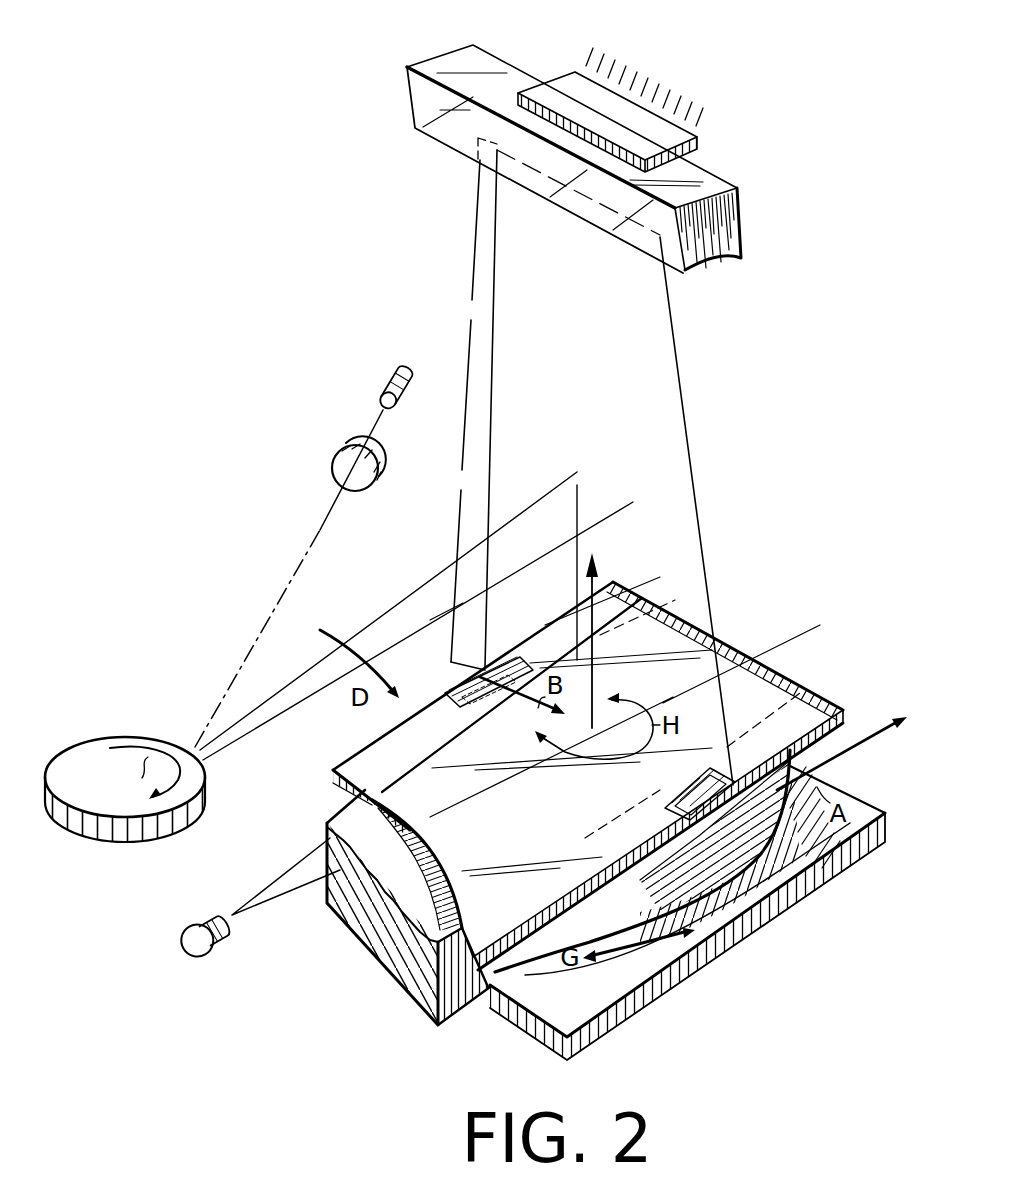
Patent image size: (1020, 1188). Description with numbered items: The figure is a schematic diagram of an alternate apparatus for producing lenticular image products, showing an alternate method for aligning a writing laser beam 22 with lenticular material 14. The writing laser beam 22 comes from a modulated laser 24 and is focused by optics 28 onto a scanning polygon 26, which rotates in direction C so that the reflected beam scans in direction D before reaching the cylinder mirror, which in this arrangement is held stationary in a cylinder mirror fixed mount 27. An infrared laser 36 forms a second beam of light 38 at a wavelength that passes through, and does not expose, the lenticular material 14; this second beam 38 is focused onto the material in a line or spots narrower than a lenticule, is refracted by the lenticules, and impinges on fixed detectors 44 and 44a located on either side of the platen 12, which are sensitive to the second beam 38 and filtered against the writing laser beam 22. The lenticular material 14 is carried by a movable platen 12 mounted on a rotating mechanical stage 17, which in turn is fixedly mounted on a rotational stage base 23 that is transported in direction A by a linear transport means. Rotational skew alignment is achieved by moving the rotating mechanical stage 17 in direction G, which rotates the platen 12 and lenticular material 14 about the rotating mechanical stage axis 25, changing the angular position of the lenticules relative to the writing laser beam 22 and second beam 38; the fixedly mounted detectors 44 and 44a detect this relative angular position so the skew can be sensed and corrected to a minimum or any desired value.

The platen 12 is at (452, 980).
The lenticular material 14 is at (822, 712).
The rotating mechanical stage 17 is at (727, 907).
The writing laser beam 22 is at (257, 637).
The rotational stage base 23 is at (837, 863).
The modulated laser 24 is at (402, 363).
The rotating mechanical stage axis 25 is at (597, 560).
The scanning polygon 26 is at (137, 735).
The cylinder mirror fixed mount 27 is at (573, 72).
The optics 28 is at (333, 468).
The infrared laser 36 is at (190, 943).
The second beam of light 38 is at (277, 878).
The fixed detector 44 is at (645, 805).
The fixed detector 44a is at (453, 700).